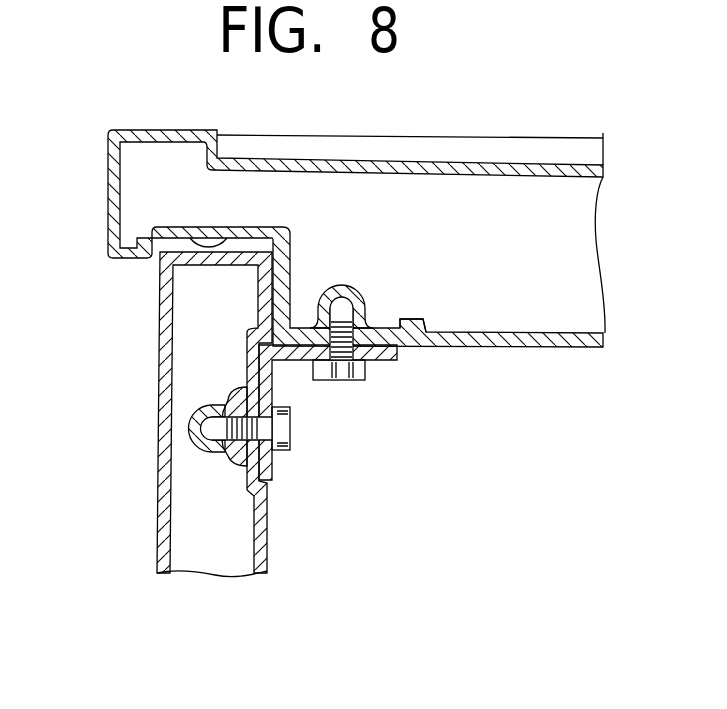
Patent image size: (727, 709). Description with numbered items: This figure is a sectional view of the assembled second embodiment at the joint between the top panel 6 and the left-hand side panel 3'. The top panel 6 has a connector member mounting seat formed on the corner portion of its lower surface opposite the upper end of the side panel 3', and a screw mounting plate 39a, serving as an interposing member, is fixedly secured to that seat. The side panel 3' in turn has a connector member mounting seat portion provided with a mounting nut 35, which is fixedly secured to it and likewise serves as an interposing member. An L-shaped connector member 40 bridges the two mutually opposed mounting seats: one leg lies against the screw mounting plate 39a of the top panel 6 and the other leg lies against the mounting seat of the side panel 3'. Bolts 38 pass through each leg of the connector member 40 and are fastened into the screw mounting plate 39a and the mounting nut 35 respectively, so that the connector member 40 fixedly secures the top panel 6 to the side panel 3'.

The top panel 6 is at (408, 162).
The screw mounting plate 39a is at (403, 327).
The left-hand side panel 3' is at (170, 414).
The L-shaped connector member 40 is at (292, 355).
The mounting nut 35 is at (233, 467).
The bolt 38 is at (362, 379).